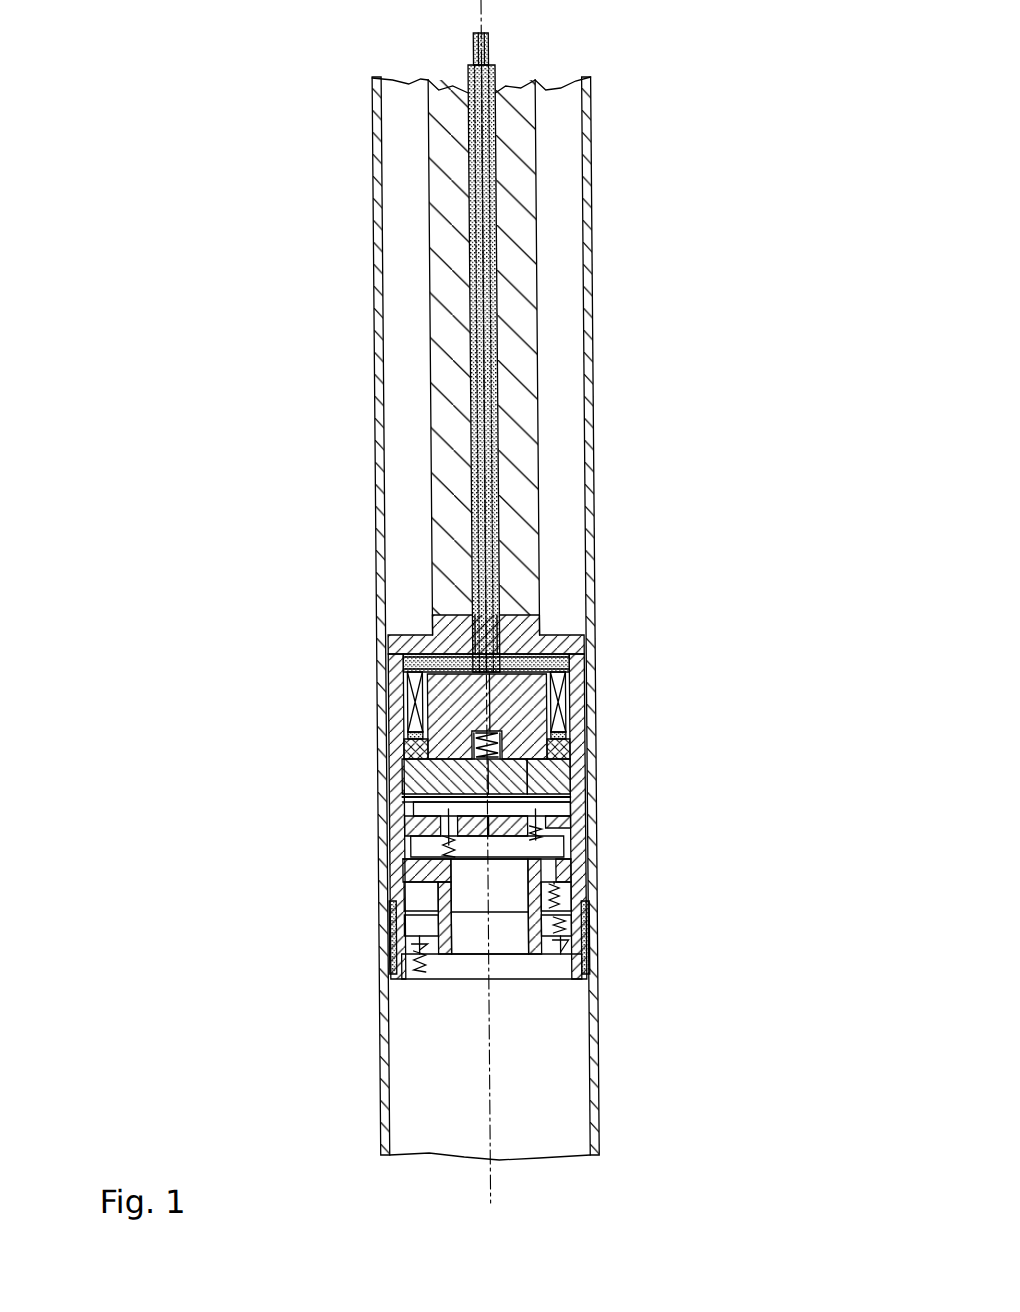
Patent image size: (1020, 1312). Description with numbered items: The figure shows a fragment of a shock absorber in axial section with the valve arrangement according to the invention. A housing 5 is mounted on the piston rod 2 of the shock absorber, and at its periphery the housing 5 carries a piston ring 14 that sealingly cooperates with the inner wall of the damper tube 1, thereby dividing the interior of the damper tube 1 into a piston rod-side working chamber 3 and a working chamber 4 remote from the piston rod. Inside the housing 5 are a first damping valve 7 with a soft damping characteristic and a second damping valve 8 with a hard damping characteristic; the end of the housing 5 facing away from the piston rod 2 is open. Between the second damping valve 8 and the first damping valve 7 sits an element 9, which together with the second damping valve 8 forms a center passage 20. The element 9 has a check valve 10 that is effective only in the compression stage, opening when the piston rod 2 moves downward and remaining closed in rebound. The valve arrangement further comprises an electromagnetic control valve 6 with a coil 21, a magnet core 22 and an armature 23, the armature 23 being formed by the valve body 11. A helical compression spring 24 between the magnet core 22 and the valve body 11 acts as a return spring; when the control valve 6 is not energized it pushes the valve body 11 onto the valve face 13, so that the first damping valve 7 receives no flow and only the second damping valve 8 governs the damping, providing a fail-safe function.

The damper tube 1 is at (589, 150).
The piston rod 2 is at (520, 257).
The piston rod-side working chamber 3 is at (571, 457).
The working chamber remote from the piston rod 4 is at (536, 1120).
The housing 5 is at (573, 645).
The control valve 6 is at (606, 672).
The first damping valve 7 is at (543, 826).
The second damping valve 8 is at (404, 952).
The element 9 is at (394, 870).
The check valve 10 is at (551, 889).
The valve body 11 is at (545, 777).
The valve face 13 is at (413, 799).
The piston ring 14 is at (577, 965).
The center passage 20 is at (478, 903).
The coil 21 is at (407, 677).
The magnet core 22 is at (459, 707).
The armature 23 is at (418, 783).
The helical compression spring 24 is at (472, 748).